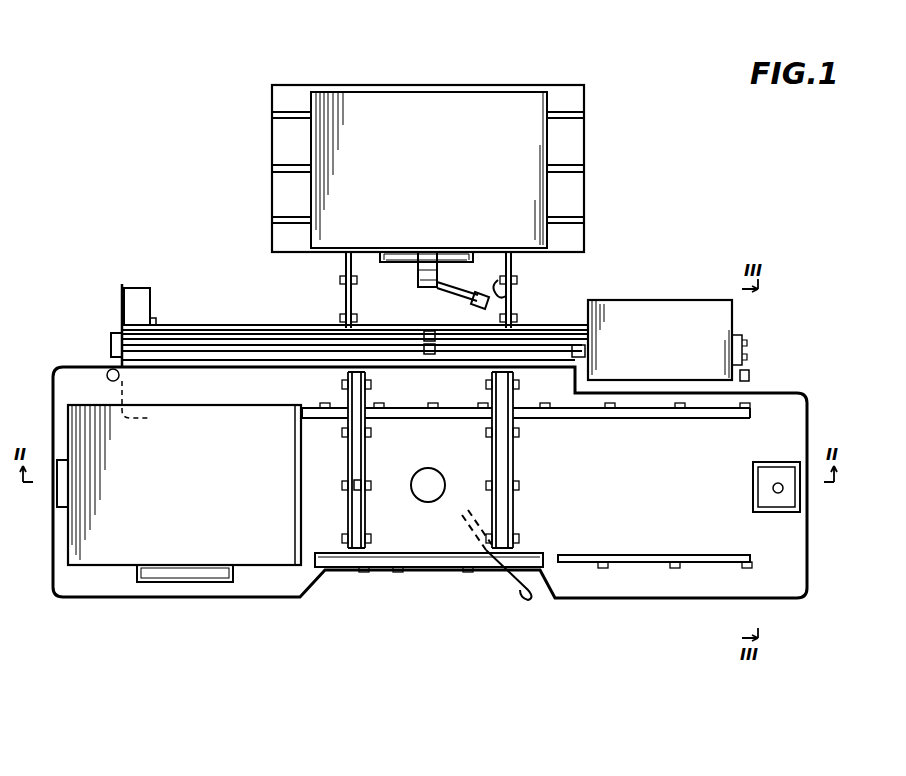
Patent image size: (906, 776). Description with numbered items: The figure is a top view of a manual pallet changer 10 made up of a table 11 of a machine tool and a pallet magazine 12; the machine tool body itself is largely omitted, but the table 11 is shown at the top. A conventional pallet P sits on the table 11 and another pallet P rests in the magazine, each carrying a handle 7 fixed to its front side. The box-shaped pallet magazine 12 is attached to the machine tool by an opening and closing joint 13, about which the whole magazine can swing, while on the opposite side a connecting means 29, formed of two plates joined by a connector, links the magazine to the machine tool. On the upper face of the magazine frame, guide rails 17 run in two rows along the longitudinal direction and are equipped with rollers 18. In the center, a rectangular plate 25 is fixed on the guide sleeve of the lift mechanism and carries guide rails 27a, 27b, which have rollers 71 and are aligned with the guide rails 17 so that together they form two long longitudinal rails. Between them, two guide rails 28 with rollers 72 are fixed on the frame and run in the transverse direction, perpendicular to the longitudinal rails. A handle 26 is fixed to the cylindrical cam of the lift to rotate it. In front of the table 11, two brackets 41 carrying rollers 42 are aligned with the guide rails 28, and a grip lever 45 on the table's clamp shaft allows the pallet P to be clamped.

The pallet changer 10 is at (236, 172).
The table 11 is at (585, 100).
The pallet magazine 12 is at (797, 404).
The opening and closing joint 13 is at (110, 345).
The guide rails 17 is at (700, 420).
The rollers 18 is at (752, 566).
The rectangular plate 25 is at (433, 542).
The handle 26 is at (518, 592).
The guide rail 27a is at (396, 410).
The guide rail 27b is at (356, 570).
The guide rails 28 is at (346, 514).
The connecting means 29 is at (766, 331).
The brackets 41 is at (513, 300).
The rollers 42 is at (503, 278).
The grip lever 45 is at (460, 298).
The handle 7 is at (387, 264).
The rollers 71 is at (433, 404).
The rollers 72 is at (366, 486).
The pallet P is at (356, 105).